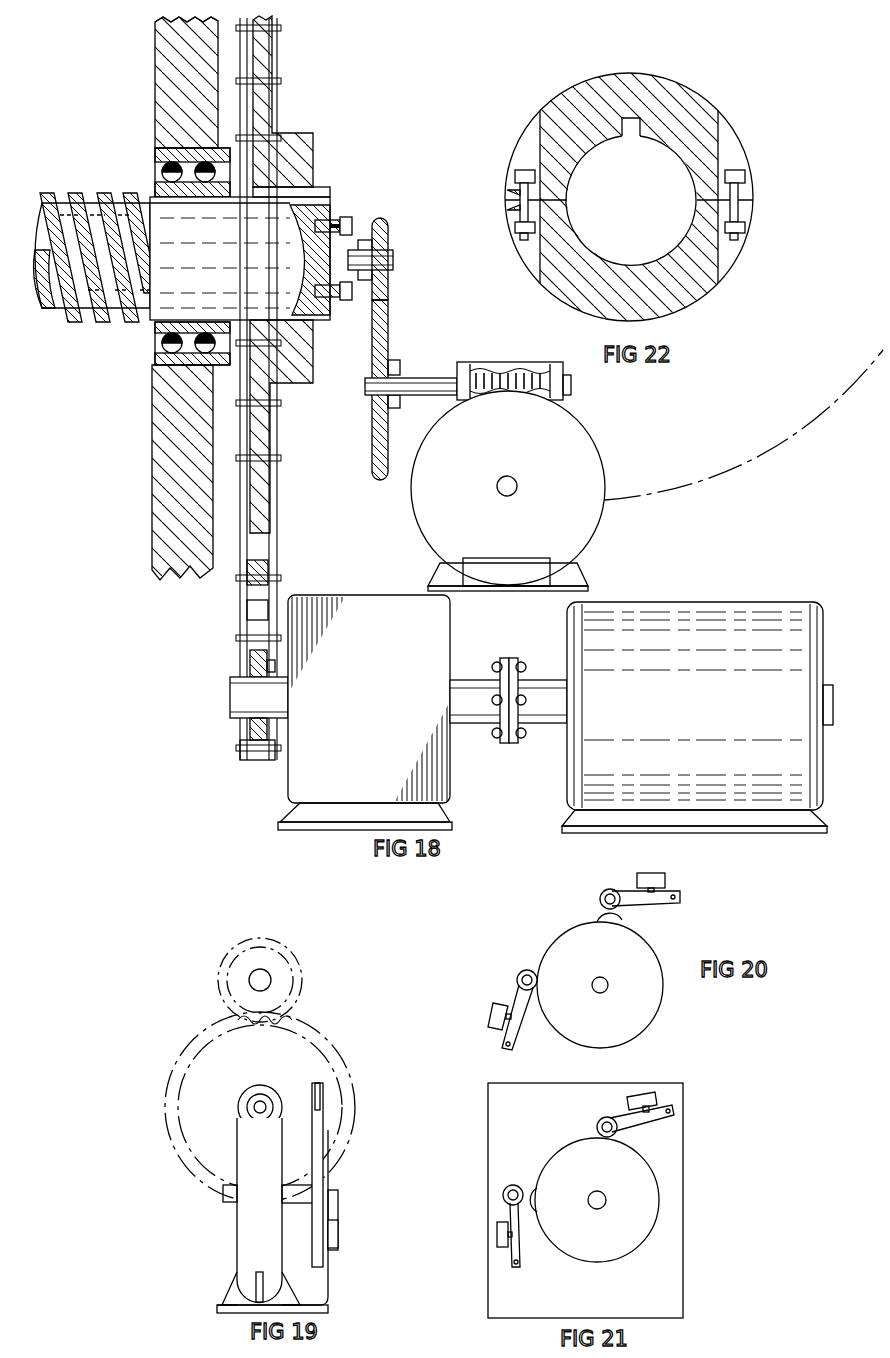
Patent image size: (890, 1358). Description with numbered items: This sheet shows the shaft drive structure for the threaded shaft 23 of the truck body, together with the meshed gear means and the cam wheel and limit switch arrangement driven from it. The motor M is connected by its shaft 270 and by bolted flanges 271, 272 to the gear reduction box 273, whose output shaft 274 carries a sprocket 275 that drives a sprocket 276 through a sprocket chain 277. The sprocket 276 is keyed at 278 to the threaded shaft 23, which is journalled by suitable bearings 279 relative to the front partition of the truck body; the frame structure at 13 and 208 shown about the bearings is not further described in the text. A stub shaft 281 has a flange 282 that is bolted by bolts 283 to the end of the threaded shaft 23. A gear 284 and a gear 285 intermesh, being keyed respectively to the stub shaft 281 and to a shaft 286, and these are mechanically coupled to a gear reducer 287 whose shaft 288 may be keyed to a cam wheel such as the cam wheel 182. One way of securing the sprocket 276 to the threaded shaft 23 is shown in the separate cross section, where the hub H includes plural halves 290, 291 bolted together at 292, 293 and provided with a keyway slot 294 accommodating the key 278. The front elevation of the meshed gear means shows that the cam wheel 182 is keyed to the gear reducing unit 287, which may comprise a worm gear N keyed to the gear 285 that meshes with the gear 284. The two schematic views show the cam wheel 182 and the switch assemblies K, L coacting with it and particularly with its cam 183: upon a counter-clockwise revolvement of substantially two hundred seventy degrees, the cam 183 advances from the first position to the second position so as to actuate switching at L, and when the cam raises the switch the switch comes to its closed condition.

In FIG. 18, the machine frame 13 is at (163, 26).
In FIG. 18, the threaded shaft 23 is at (97, 303).
In FIG. 18, the frame block 208 is at (172, 65).
In FIG. 18, the bearings 279 is at (155, 150).
In FIG. 18, the sprocket 276 is at (288, 140).
In FIG. 18, the sprocket chain 277 is at (278, 556).
In FIG. 18, the key 278 is at (318, 188).
In FIG. 18, the flange 282 is at (348, 220).
In FIG. 18, the bolts 283 is at (352, 228).
In FIG. 18, the stub shaft 281 is at (393, 260).
In FIG. 18, the gear 284 is at (388, 288).
In FIG. 19, the gear 284 is at (275, 960).
In FIG. 18, the gear 285 is at (388, 333).
In FIG. 19, the gear 285 is at (207, 1060).
In FIG. 18, the shaft 286 is at (415, 385).
In FIG. 18, the worm gear N is at (528, 364).
In FIG. 19, the worm gear N is at (248, 1105).
In FIG. 18, the gear reducer 287 is at (590, 478).
In FIG. 19, the gear reducer 287 is at (248, 1153).
In FIG. 18, the shaft 288 is at (516, 478).
In FIG. 18, the sprocket 275 is at (255, 662).
In FIG. 18, the output shaft 274 is at (240, 700).
In FIG. 18, the gear reduction box 273 is at (306, 778).
In FIG. 18, the bolted flange 272 is at (497, 740).
In FIG. 18, the bolted flange 271 is at (511, 745).
In FIG. 18, the shaft 270 is at (547, 716).
In FIG. 18, the motor M is at (697, 717).
In FIG. 22, the hub half 290 is at (622, 85).
In FIG. 22, the hub H is at (682, 100).
In FIG. 22, the hub half 291 is at (700, 298).
In FIG. 22, the bolt 292 is at (738, 175).
In FIG. 22, the bolt 293 is at (525, 175).
In FIG. 22, the keyway slot 294 is at (634, 136).
In FIG. 19, the cam wheel 182 is at (320, 1165).
In FIG. 20, the cam wheel 182 is at (655, 1018).
In FIG. 21, the cam wheel 182 is at (650, 1195).
In FIG. 20, the cam 183 is at (625, 916).
In FIG. 21, the cam 183 is at (527, 1185).
In FIG. 20, the switch assembly K is at (633, 880).
In FIG. 21, the switch assembly K is at (635, 1114).
In FIG. 20, the switch assembly L is at (493, 1013).
In FIG. 21, the switch assembly L is at (497, 1230).